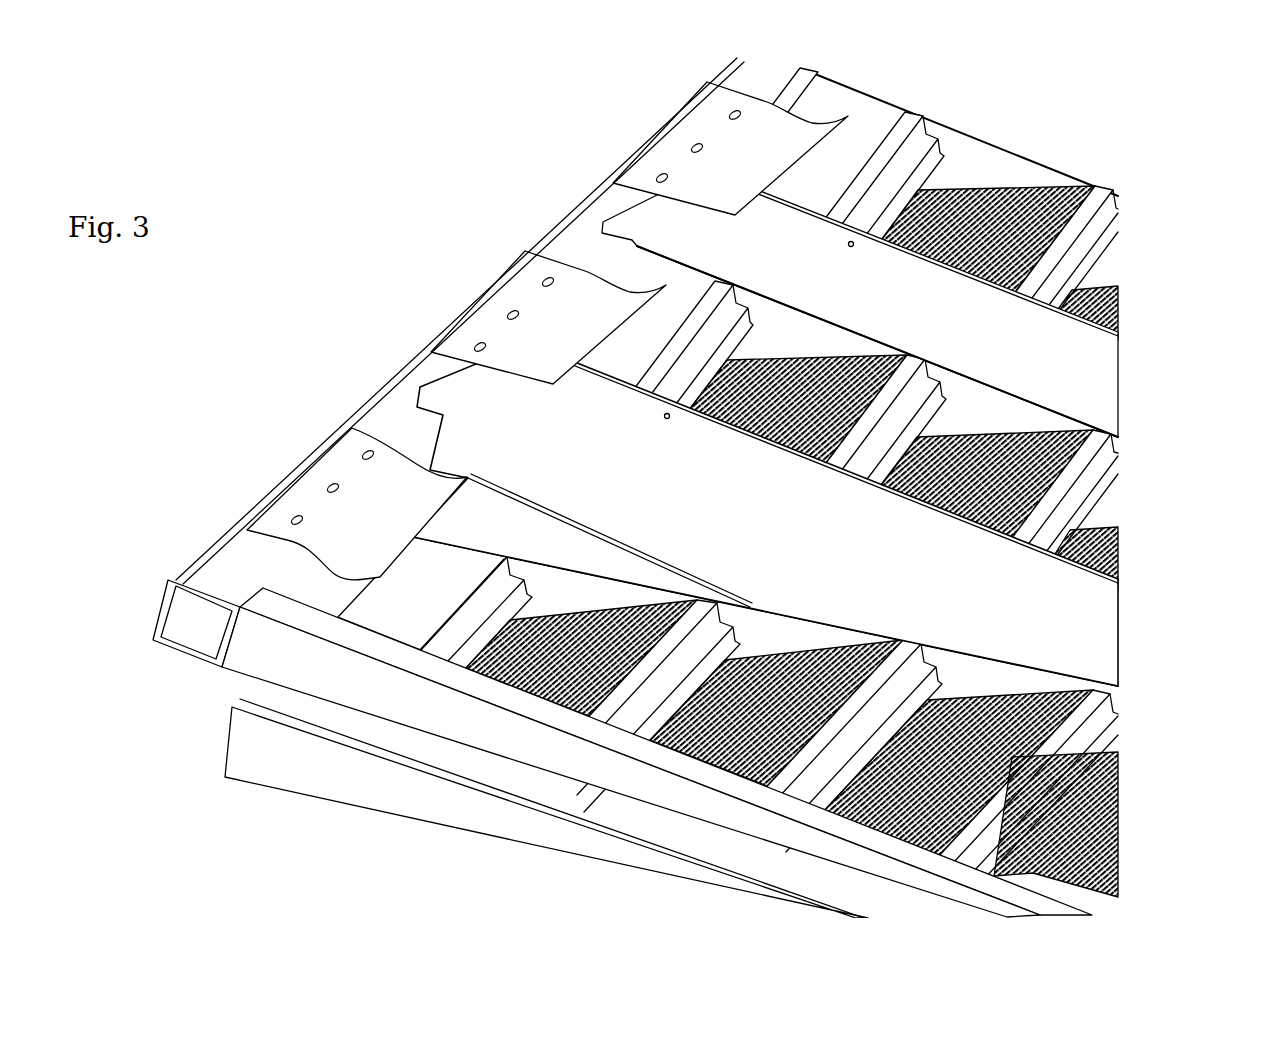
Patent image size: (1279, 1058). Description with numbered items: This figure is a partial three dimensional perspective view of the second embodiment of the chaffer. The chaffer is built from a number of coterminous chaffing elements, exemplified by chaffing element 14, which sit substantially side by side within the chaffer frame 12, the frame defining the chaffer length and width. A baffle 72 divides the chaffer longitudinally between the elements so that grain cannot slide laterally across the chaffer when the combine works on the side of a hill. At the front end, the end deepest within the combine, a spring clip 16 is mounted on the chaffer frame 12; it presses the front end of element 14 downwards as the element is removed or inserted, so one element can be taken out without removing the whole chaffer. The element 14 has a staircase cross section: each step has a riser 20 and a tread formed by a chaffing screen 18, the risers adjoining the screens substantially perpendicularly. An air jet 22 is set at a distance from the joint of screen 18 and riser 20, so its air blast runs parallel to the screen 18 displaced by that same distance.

The chaffer frame 12 is at (583, 193).
The chaffing element 14 is at (232, 742).
The spring clip 16 is at (252, 536).
The chaffing screen 18 is at (507, 680).
The riser 20 is at (618, 708).
The air jet 22 is at (660, 735).
The baffle 72 is at (437, 378).